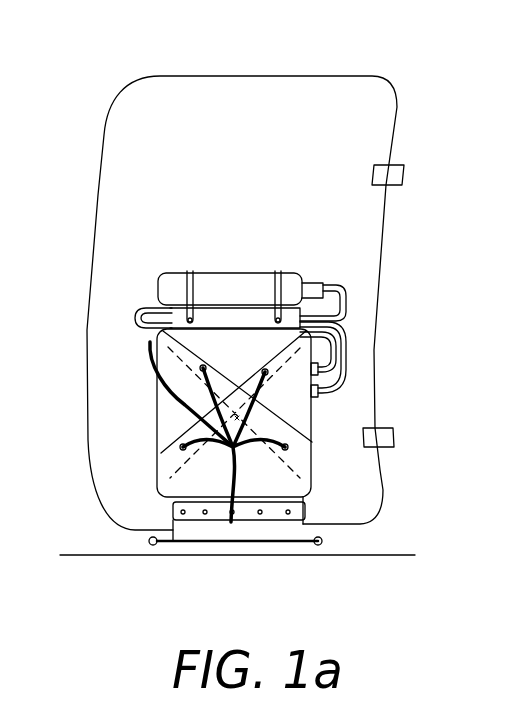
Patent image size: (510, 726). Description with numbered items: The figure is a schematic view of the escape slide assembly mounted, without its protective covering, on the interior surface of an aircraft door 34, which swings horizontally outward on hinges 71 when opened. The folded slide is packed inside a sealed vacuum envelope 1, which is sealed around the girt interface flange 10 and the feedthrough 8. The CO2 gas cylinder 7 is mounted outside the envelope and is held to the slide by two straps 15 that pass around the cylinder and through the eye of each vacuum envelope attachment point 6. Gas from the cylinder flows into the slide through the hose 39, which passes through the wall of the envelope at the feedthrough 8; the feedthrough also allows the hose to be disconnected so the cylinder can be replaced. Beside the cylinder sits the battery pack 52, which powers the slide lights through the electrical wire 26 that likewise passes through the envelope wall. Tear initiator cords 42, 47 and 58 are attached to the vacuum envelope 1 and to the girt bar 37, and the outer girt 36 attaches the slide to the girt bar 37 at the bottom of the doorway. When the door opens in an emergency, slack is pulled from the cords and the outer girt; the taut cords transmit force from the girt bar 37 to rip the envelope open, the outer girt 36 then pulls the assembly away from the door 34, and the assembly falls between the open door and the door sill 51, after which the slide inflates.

The aircraft door 34 is at (337, 93).
The hinges 71 is at (402, 177).
The straps 15 is at (275, 274).
The CO2 gas cylinder 7 is at (170, 282).
The vacuum envelope attachment point 6 is at (280, 322).
The battery pack 52 is at (140, 315).
The hose 39 is at (333, 345).
The electrical wire 26 is at (347, 369).
The tear initiator cord 58 is at (152, 350).
The feedthrough 8 is at (313, 377).
The vacuum envelope 1 is at (165, 414).
The tear initiator cord 42 is at (248, 412).
The tear initiator cord 47 is at (235, 447).
The girt interface flange 10 is at (173, 507).
The outer girt 36 is at (303, 531).
The girt bar 37 is at (322, 545).
The door sill 51 is at (133, 540).